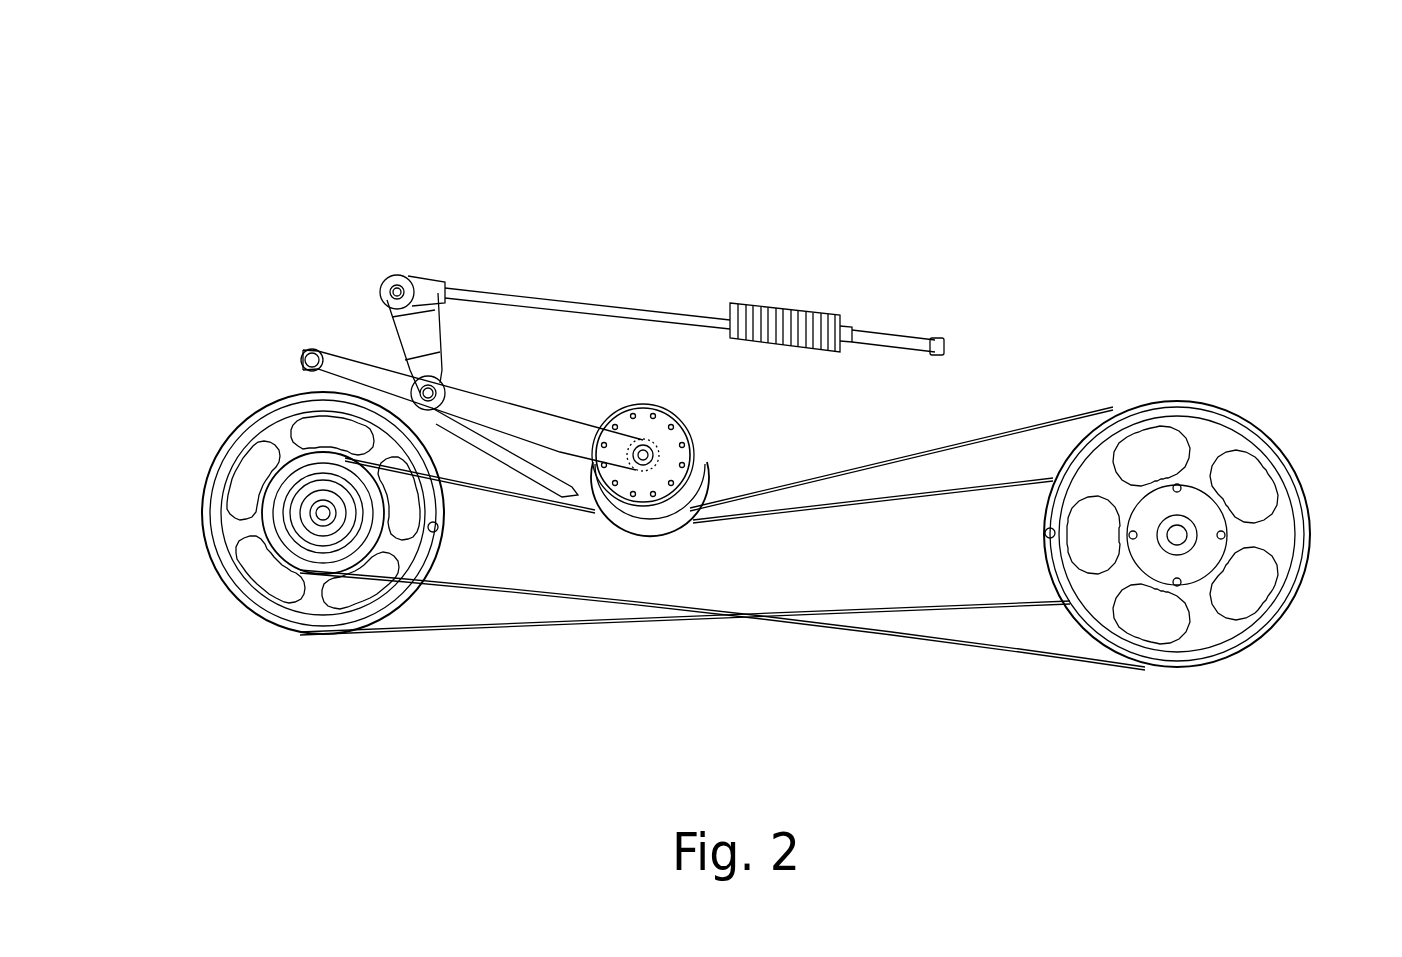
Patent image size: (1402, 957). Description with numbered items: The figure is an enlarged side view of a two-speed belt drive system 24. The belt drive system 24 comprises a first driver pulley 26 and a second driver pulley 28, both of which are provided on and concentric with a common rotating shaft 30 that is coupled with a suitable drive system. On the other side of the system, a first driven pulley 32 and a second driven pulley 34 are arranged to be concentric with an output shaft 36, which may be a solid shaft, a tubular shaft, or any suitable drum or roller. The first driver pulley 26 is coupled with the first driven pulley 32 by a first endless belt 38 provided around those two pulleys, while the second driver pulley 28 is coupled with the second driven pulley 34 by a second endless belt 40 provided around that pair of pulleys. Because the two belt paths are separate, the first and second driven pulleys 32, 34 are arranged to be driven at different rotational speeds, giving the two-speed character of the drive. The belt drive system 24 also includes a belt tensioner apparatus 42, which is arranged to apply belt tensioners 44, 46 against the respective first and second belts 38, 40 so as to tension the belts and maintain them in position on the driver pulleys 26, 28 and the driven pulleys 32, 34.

The two-speed belt drive system 24 is at (1065, 178).
The first driver pulley 26 is at (272, 618).
The second driver pulley 28 is at (270, 493).
The common rotating shaft 30 is at (323, 513).
The first driven pulley 32 is at (1150, 593).
The second driven pulley 34 is at (1262, 440).
The output shaft 36 is at (1177, 545).
The first endless belt 38 is at (547, 620).
The second endless belt 40 is at (1035, 433).
The belt tensioner apparatus 42 is at (538, 240).
The belt tensioner 44 is at (713, 477).
The belt tensioner 46 is at (700, 440).